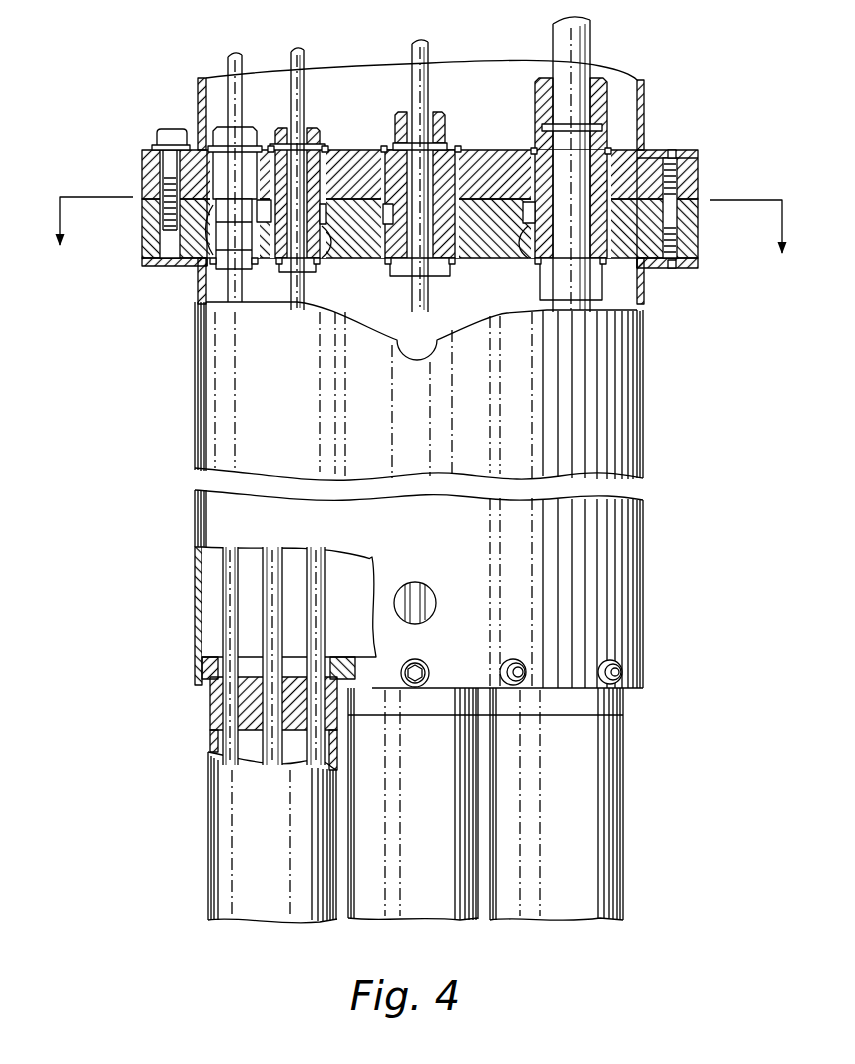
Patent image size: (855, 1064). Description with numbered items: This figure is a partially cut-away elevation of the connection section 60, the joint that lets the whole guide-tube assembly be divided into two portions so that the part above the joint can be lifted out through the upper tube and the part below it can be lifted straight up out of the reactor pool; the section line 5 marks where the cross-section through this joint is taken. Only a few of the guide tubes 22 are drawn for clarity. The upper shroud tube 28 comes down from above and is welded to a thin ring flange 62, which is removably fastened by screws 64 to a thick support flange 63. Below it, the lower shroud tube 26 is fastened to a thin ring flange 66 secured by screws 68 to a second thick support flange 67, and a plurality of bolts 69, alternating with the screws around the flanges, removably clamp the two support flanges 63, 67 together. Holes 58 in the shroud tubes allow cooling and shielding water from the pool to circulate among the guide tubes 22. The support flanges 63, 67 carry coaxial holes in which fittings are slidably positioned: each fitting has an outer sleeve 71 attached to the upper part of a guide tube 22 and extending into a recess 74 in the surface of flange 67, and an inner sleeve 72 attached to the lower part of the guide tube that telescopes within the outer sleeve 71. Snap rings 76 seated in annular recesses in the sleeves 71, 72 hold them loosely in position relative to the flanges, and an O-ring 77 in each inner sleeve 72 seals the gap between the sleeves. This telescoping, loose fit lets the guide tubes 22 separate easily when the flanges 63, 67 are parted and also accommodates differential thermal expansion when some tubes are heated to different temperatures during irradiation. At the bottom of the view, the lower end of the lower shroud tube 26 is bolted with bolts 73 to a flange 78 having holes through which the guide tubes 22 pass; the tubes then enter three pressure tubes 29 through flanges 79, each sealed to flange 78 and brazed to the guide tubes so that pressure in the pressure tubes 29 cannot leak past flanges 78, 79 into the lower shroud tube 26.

The connection section 60 is at (103, 131).
The upper shroud tube 28 is at (203, 87).
The thin ring flange 62 is at (155, 152).
The bolts 69 is at (171, 129).
The outer sleeve 71 is at (243, 128).
The snap rings 76 is at (272, 146).
The O-ring 77 is at (322, 158).
The screws 64 is at (672, 150).
The thick support flange 63 is at (700, 172).
The thick support flange 67 is at (700, 233).
The thin ring flange 66 is at (148, 268).
The recesses 74 is at (211, 222).
The inner sleeve 72 is at (251, 268).
The screws 68 is at (650, 270).
The holes 58 is at (435, 351).
The lower shroud tube 26 is at (195, 392).
The guide tubes 22 is at (217, 603).
The cap screw 73 is at (505, 670).
The flange 78 is at (200, 688).
The flanges 79 is at (251, 731).
The pressure tubes 29 is at (208, 860).
The section line 5- 5 is at (420, 238).